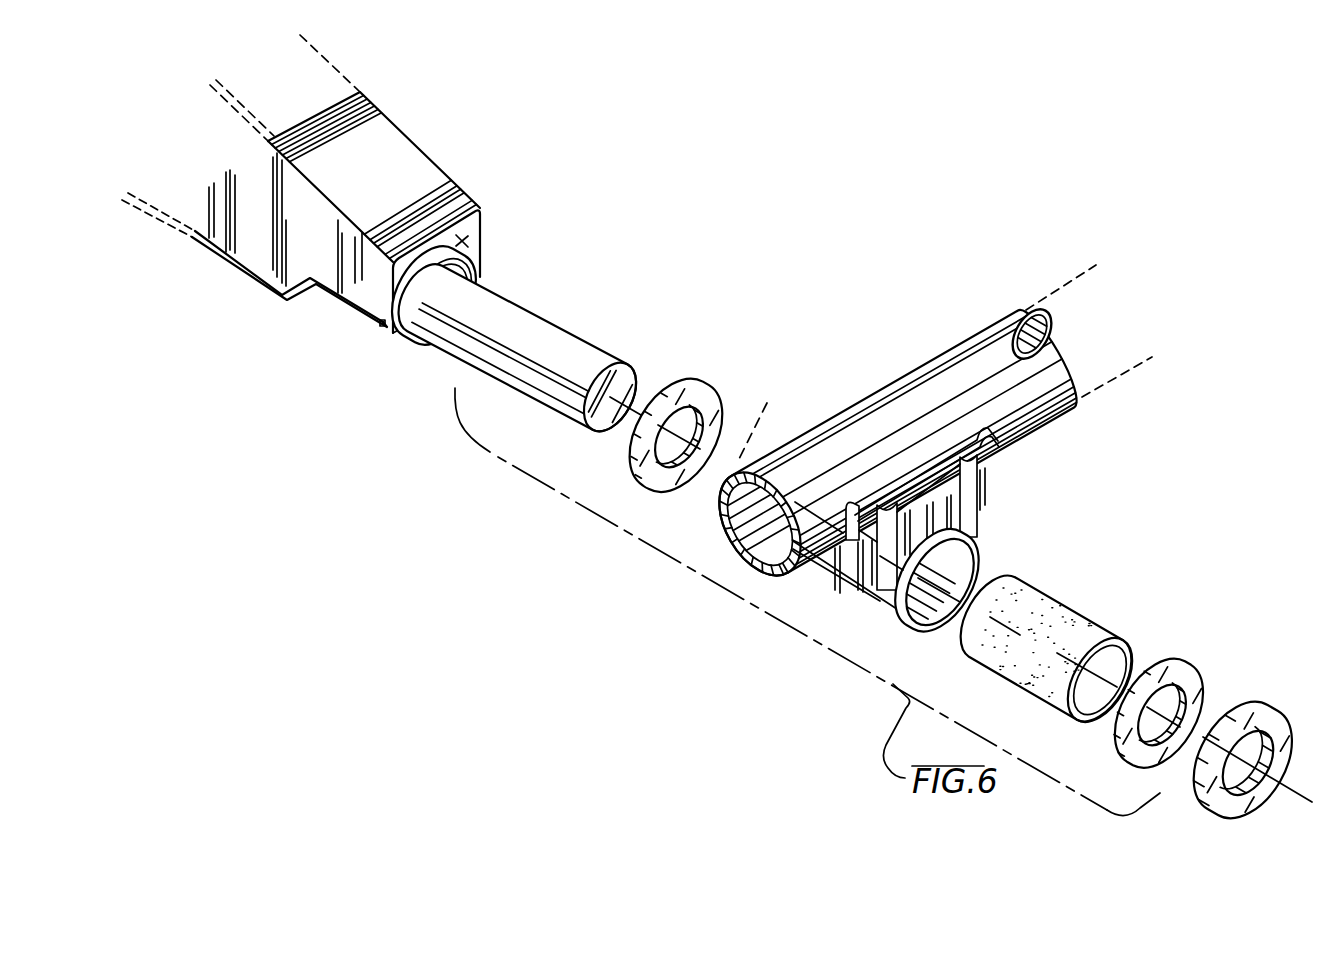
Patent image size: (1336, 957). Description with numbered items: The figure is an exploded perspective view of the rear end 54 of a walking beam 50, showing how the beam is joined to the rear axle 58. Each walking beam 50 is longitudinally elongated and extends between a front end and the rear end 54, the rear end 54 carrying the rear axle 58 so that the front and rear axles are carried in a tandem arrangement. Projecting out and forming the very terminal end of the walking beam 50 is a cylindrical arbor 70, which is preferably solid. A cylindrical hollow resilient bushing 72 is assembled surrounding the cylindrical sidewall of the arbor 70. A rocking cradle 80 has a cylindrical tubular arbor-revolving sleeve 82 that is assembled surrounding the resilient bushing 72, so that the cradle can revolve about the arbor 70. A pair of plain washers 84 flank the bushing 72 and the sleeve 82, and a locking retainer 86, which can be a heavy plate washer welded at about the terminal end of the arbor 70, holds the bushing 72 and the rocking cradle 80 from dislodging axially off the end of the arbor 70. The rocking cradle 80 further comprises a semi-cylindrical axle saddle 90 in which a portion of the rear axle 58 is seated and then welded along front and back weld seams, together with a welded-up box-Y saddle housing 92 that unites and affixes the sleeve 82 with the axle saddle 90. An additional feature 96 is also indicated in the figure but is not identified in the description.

The walking beam 50 is at (440, 171).
The rear end 54 is at (466, 241).
The rear axle 58 is at (931, 362).
The cylindrical arbor 70 is at (560, 330).
The resilient bushing 72 is at (1100, 627).
The rocking cradle 80 is at (958, 520).
The cylindrical tubular arbor-revolving sleeve 82 is at (984, 557).
The plain washers 84 is at (700, 383).
The locking retainer 86 is at (1272, 714).
The semi-cylindrical axle saddle 90 is at (986, 449).
The box-Y saddle housing 92 is at (978, 504).
The bore 96 is at (762, 413).